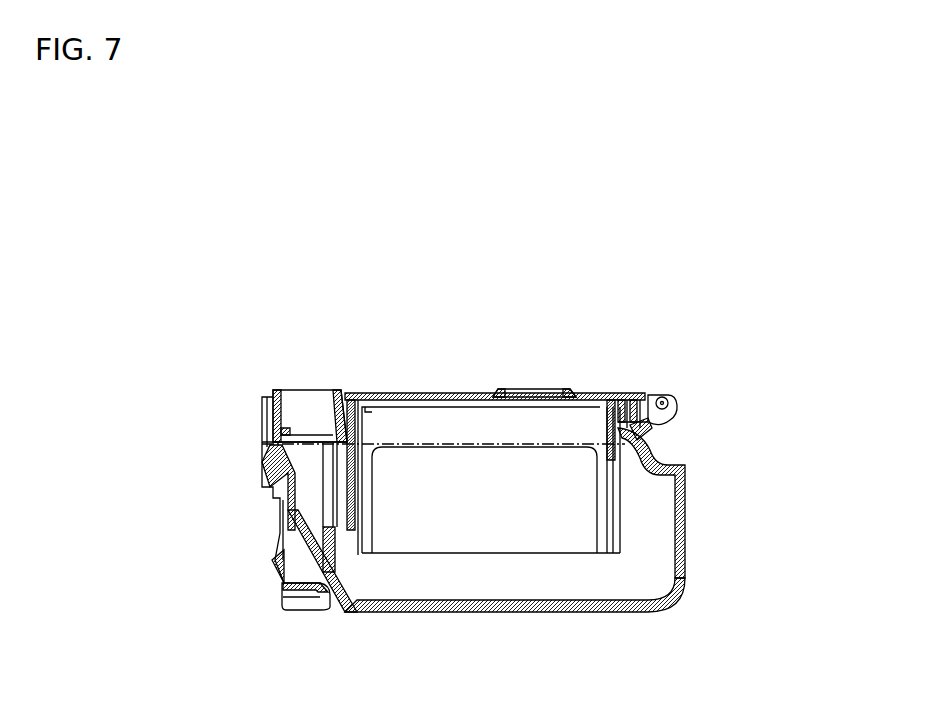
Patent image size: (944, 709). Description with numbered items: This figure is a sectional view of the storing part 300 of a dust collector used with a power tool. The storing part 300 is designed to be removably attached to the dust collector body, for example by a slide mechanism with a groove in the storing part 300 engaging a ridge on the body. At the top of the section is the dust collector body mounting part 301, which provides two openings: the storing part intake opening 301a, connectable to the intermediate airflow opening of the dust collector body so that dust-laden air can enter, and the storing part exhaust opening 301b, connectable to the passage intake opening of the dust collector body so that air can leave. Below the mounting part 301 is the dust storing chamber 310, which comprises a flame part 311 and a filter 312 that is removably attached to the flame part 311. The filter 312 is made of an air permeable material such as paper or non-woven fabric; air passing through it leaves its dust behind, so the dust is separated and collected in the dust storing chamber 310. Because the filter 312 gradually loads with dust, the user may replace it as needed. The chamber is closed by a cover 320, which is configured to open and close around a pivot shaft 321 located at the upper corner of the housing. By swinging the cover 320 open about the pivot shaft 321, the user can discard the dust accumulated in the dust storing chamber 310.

The storing part 300 is at (218, 368).
The dust collector body mounting part 301 is at (397, 383).
The storing part intake opening 301a is at (303, 389).
The storing part exhaust opening 301b is at (540, 396).
The dust storing chamber 310 is at (578, 582).
The flame part 311 is at (604, 525).
The filter 312 is at (484, 525).
The cover 320 is at (660, 608).
The pivot shaft 321 is at (672, 403).